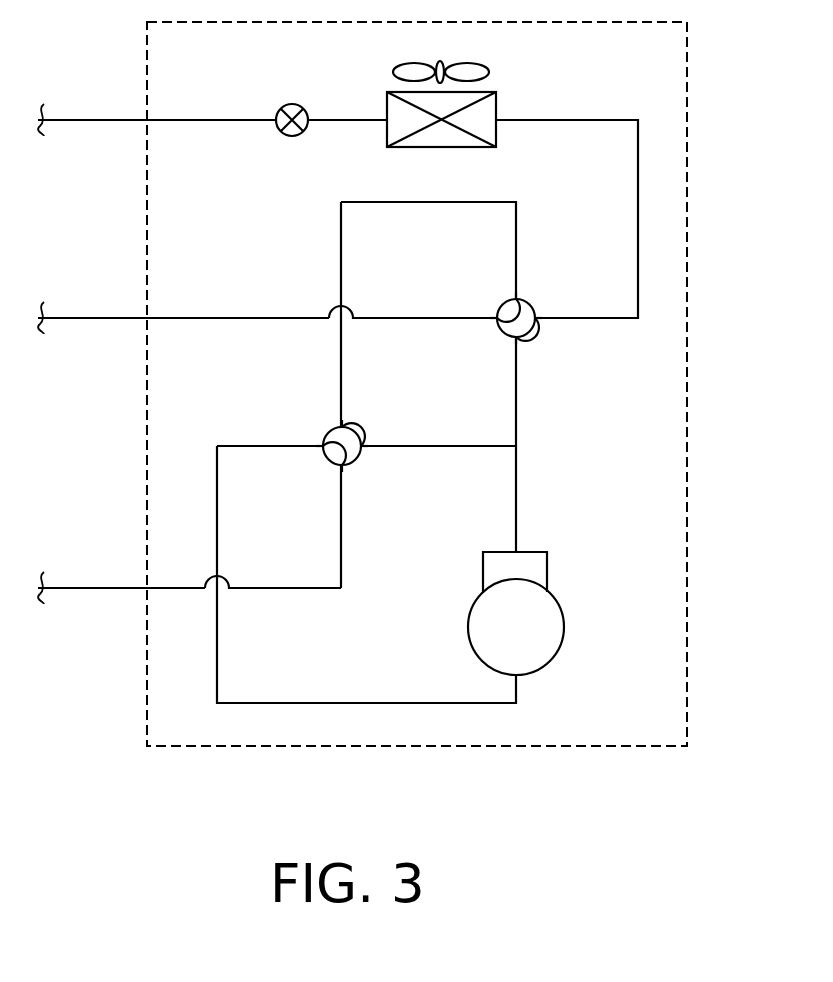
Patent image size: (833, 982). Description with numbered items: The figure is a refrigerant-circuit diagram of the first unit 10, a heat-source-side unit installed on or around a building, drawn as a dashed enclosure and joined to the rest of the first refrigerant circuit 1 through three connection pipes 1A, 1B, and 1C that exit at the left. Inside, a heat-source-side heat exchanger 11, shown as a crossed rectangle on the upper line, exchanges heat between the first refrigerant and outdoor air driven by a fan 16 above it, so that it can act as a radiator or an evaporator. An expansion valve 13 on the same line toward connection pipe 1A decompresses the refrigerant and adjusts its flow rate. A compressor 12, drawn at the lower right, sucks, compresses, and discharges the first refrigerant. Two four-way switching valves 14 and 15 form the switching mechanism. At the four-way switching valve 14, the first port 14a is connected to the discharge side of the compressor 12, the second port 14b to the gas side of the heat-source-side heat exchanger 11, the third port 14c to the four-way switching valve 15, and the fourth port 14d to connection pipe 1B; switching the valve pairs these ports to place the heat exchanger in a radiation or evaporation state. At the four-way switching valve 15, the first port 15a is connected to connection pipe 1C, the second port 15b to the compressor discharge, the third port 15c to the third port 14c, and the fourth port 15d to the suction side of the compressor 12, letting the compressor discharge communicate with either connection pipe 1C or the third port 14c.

The first refrigerant circuit 1 is at (752, 176).
The connection pipe 1A is at (106, 120).
The connection pipe 1B is at (106, 318).
The connection pipe 1C is at (106, 588).
The first unit 10 is at (422, 746).
The heat-source-side heat exchanger 11 is at (496, 147).
The compressor 12 is at (564, 627).
The expansion valve 13 is at (281, 131).
The four-way switching valve 14 is at (530, 330).
The first port 14a is at (512, 334).
The second port 14b is at (552, 306).
The third port 14c is at (512, 300).
The fourth port 14d is at (498, 312).
The four-way switching valve 15 is at (332, 438).
The first port 15a is at (340, 464).
The second port 15b is at (358, 455).
The third port 15c is at (342, 431).
The fourth port 15d is at (328, 452).
The fan 16 is at (491, 71).